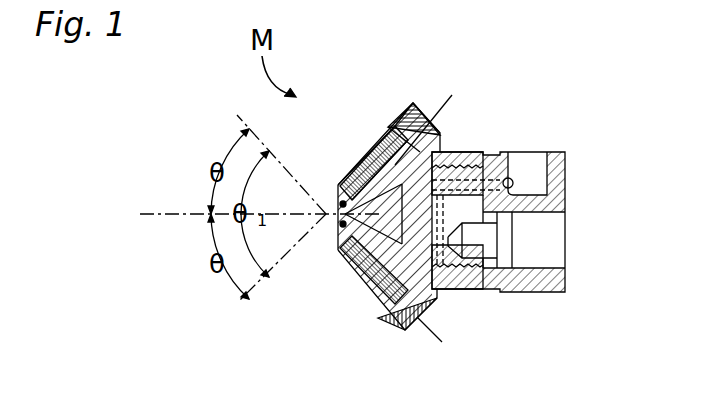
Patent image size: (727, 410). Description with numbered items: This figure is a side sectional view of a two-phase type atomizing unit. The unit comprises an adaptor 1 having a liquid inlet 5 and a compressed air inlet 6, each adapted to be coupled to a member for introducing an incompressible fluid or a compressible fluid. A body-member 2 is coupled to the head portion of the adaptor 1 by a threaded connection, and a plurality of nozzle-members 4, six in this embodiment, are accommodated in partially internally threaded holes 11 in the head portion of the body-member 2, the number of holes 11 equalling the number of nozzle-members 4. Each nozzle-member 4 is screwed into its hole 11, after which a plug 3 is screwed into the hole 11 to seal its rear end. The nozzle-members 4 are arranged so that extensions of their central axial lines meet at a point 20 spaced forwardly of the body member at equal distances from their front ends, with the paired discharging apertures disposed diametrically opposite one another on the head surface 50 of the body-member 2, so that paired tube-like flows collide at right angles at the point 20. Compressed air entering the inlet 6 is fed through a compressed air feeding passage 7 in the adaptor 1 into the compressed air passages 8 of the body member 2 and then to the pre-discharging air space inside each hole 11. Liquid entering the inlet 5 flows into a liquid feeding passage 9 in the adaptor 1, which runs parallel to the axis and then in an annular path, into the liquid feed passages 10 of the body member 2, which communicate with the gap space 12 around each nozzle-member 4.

The adaptor 1 is at (538, 152).
The body-member 2 is at (490, 153).
The plug 3 is at (418, 125).
The nozzle-member 4 is at (375, 150).
The liquid inlet 5 is at (556, 152).
The compressed air inlet 6 is at (552, 237).
The compressed air feeding passage 7 is at (448, 218).
The compressed air passage 8 is at (362, 150).
The liquid feeding passage 9 is at (500, 153).
The liquid feed passage 10 is at (458, 152).
The hole 11 is at (360, 185).
The gap space 12 is at (383, 152).
The point 20 is at (325, 216).
The head surface 50 is at (338, 247).